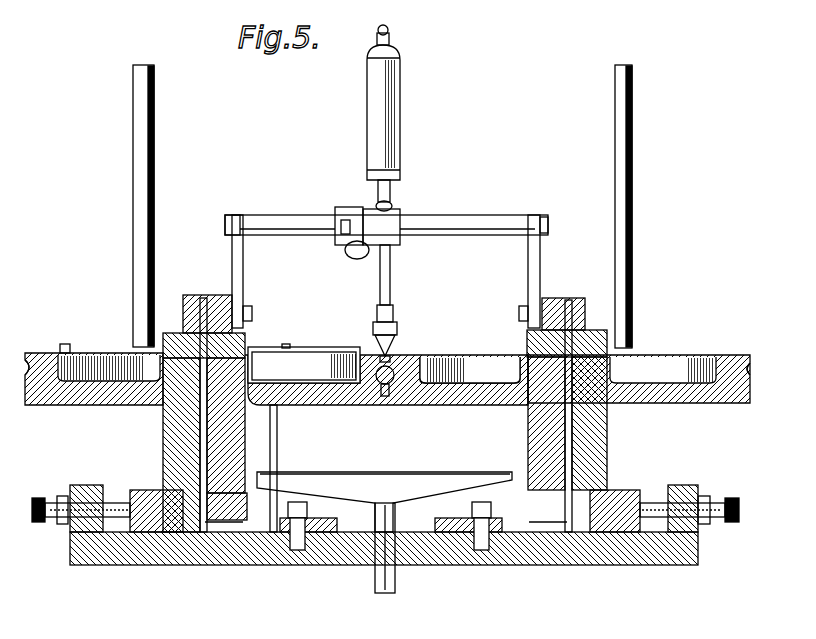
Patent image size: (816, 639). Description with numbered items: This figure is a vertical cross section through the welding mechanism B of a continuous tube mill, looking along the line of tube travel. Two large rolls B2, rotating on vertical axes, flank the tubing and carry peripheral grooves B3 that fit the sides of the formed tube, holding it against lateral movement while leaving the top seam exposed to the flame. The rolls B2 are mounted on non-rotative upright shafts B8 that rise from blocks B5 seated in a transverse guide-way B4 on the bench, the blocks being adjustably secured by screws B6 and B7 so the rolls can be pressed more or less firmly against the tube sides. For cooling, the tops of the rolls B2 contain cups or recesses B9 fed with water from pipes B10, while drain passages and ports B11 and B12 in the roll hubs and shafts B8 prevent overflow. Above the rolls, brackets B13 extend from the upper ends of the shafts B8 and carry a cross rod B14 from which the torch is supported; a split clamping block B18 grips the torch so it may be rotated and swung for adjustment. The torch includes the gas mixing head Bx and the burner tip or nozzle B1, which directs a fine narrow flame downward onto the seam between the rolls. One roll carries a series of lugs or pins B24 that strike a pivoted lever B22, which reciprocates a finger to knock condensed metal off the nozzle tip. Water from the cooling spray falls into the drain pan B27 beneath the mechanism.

The welding mechanism B is at (375, 152).
The burner tip or nozzle B1 is at (396, 355).
The rolls B2 is at (125, 402).
The peripheral grooves B3 is at (22, 372).
The transverse guide-way B4 is at (178, 560).
The blocks B5 is at (262, 560).
The screws B6 is at (46, 522).
The screws B7 is at (297, 566).
The upright shafts B8 is at (195, 458).
The cups or recesses B9 is at (86, 376).
The pipes B10 is at (133, 262).
The drain passages and ports B11 is at (160, 350).
The drain passages and ports B12 is at (207, 433).
The brackets B13 is at (250, 266).
The cross rod B14 is at (297, 214).
The split clamping block B18 is at (350, 259).
The lever B22 is at (335, 341).
The lugs or pins B24 is at (62, 350).
The drain pan B27 is at (450, 472).
The gas mixing head Bx is at (394, 312).